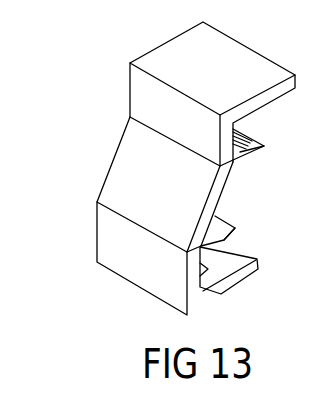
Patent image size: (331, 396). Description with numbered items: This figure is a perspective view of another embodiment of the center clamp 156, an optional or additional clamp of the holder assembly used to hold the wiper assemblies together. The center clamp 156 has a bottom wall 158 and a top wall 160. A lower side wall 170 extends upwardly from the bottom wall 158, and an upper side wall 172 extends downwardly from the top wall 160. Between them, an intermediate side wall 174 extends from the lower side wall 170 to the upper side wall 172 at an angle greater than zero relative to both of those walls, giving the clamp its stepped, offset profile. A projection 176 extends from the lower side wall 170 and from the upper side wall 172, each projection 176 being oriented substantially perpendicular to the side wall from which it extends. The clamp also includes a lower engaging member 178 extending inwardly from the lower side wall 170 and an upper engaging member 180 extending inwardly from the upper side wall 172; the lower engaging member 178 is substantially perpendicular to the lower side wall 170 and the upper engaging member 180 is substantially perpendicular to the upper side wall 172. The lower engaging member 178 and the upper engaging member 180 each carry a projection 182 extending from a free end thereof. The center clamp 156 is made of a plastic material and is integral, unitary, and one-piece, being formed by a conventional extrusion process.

The center clamp 156 is at (86, 140).
The bottom wall 158 is at (236, 262).
The top wall 160 is at (214, 63).
The lower side wall 170 is at (137, 262).
The upper side wall 172 is at (152, 100).
The intermediate side wall 174 is at (142, 182).
The projection 176 is at (205, 278).
The lower engaging member 178 is at (213, 218).
The upper engaging member 180 is at (249, 155).
The projection 182 is at (264, 145).